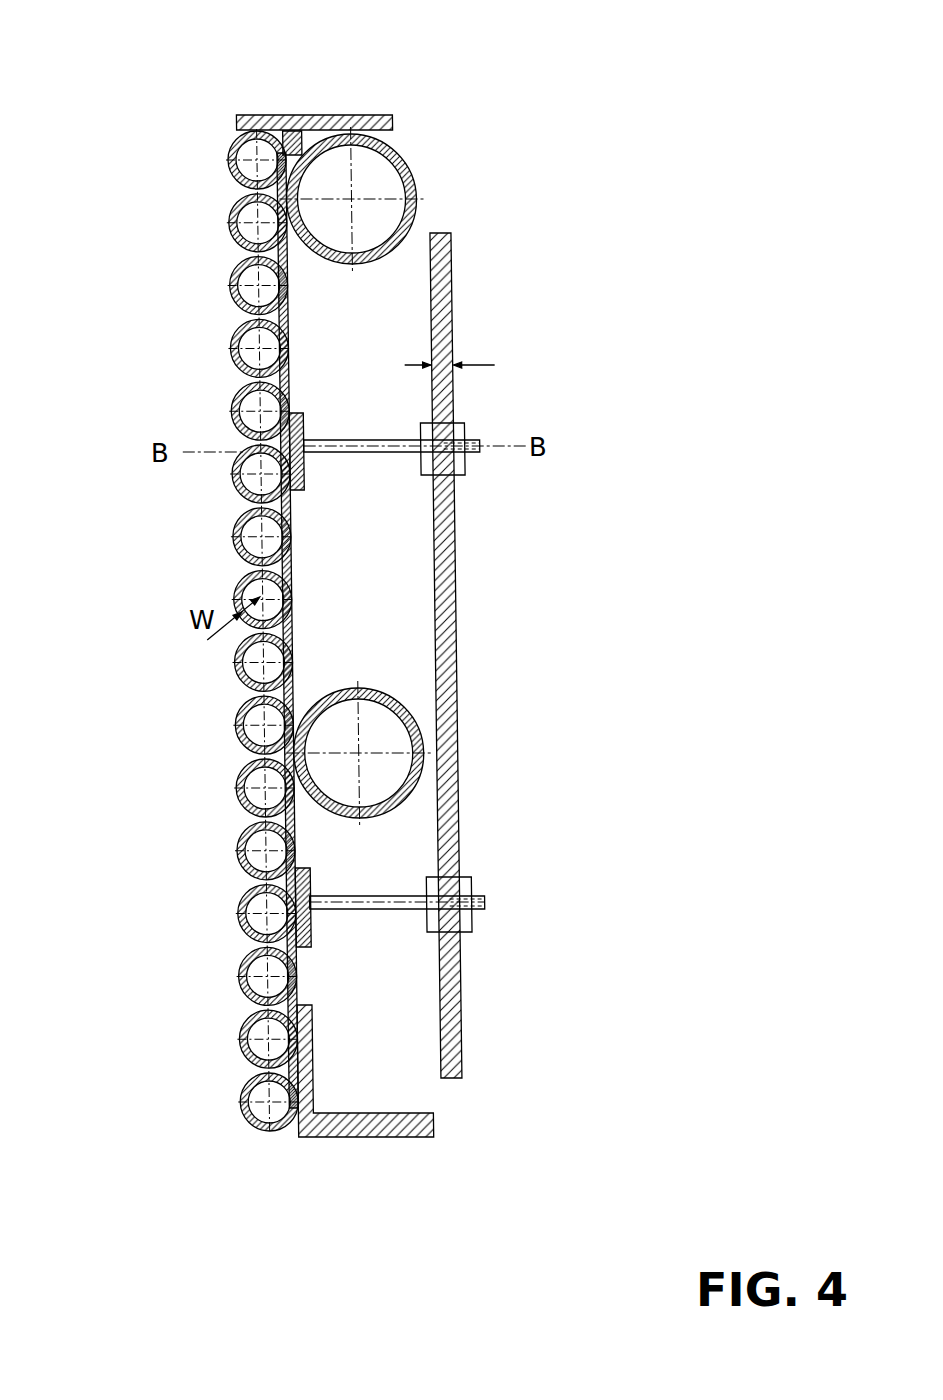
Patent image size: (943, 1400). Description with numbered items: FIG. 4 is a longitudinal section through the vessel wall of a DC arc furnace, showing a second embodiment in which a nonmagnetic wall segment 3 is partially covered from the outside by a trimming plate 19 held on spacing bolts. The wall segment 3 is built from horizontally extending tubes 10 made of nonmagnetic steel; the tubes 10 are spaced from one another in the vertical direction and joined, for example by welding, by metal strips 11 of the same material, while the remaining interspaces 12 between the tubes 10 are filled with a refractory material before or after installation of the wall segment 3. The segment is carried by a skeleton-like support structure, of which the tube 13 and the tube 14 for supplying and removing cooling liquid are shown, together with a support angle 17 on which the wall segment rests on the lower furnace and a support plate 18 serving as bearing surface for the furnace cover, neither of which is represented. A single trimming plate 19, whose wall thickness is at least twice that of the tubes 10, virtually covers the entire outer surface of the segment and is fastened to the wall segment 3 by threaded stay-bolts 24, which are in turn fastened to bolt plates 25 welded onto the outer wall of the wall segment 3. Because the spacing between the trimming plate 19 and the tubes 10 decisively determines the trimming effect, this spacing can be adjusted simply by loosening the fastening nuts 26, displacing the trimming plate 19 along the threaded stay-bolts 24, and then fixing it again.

The wall segment 3 is at (123, 687).
The tubes 10 is at (343, 631).
The metal strips 11 is at (284, 623).
The interspaces 12 is at (268, 320).
The tube 13 is at (406, 724).
The tube 14 is at (415, 178).
The support angle 17 is at (348, 1127).
The support plate 18 is at (306, 125).
The trimming plate 19 is at (438, 278).
The stay-bolts 24 is at (358, 452).
The bolt plates 25 is at (290, 430).
The fastening nuts 26 is at (423, 468).